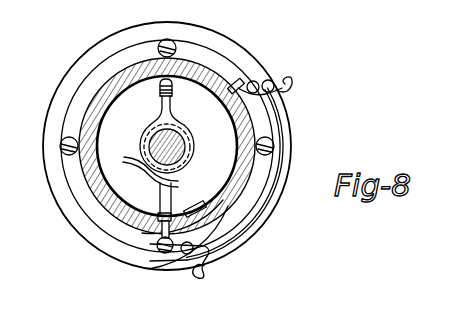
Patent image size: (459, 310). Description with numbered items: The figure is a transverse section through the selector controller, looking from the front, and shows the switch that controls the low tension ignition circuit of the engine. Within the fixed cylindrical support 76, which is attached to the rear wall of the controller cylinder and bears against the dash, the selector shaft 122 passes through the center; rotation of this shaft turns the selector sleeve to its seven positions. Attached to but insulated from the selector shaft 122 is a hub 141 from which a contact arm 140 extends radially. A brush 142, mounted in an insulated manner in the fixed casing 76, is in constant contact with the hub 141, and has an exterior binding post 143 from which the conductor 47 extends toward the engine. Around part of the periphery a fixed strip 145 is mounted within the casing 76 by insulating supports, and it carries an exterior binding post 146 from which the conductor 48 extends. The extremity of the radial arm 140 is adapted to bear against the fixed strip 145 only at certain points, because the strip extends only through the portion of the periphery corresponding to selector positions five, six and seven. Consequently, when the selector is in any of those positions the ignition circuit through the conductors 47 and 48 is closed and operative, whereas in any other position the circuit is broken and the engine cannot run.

The cylindrical support 76 is at (112, 75).
The selector shaft 122 is at (153, 140).
The contact arm 140 is at (172, 110).
The hub 141 is at (190, 143).
The brush 142 is at (158, 178).
The binding post 143 is at (158, 245).
The fixed strip 145 is at (247, 130).
The binding post 146 is at (238, 82).
The conductor 48 is at (291, 82).
The conductor 47 is at (204, 278).